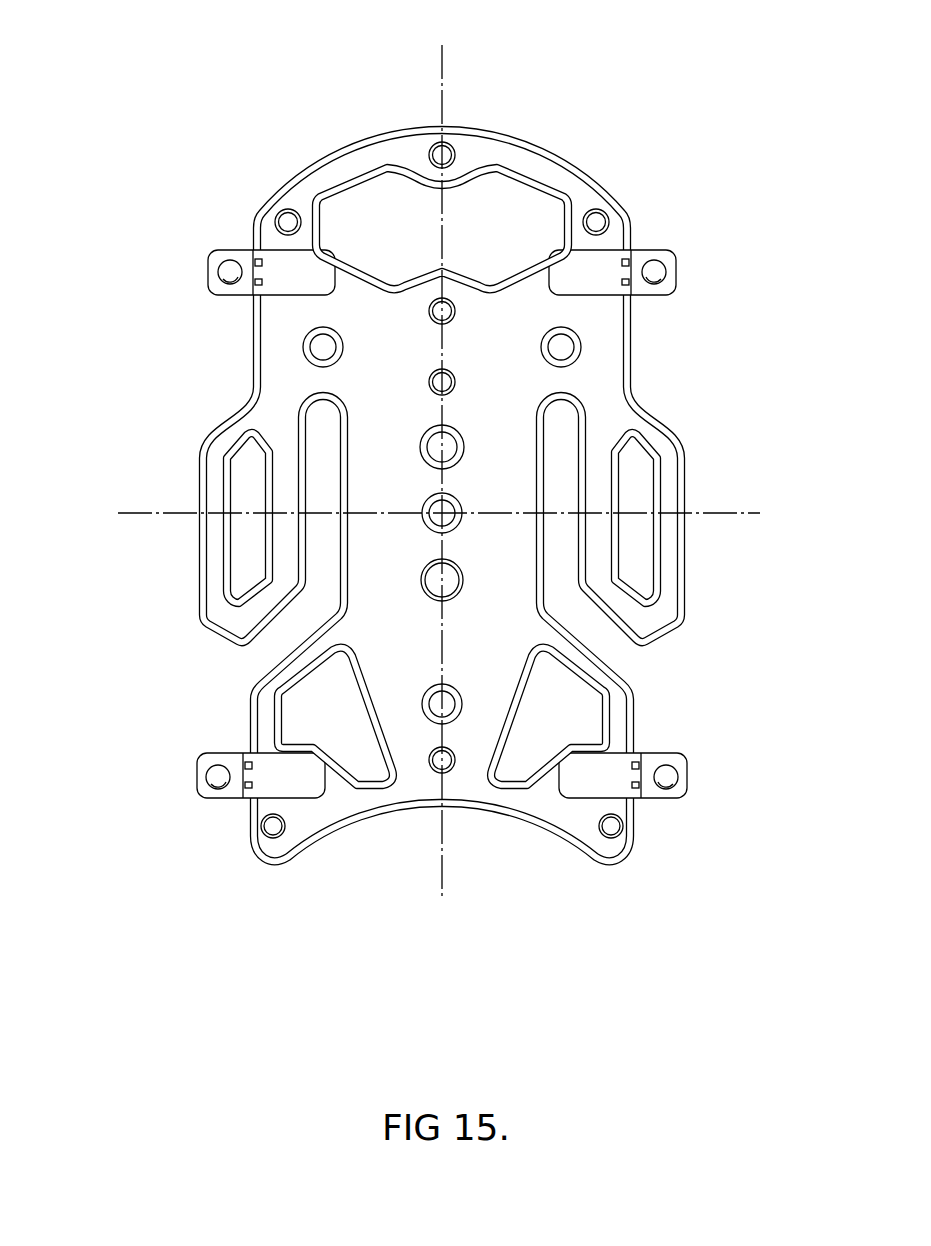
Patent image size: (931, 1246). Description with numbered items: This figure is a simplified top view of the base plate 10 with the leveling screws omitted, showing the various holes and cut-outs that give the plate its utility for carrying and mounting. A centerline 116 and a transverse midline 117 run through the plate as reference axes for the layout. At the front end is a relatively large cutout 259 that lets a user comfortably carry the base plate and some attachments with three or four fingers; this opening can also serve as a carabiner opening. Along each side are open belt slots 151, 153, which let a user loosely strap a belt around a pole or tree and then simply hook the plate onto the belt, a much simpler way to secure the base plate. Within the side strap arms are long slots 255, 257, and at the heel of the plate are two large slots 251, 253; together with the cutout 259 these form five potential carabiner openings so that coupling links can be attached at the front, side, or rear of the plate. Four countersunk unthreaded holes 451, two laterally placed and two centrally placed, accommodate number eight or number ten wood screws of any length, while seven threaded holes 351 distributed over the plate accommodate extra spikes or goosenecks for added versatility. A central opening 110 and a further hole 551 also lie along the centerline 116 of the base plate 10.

The base plate 10 is at (778, 83).
The central opening 110 is at (462, 571).
The central longitudinal axis (CL) 116 is at (443, 76).
The medial-lateral axis (ML) 117 is at (143, 515).
The open belt slot 151 is at (270, 645).
The open belt slot 153 is at (618, 643).
The carabiner opening 251 is at (307, 716).
The carabiner opening 253 is at (593, 717).
The carabiner opening 255 is at (240, 548).
The carabiner opening 257 is at (642, 557).
The cutout 259 is at (507, 190).
The threaded holes 351 is at (432, 146).
The countersunk unthreaded holes 451 is at (341, 333).
The aperture 551 is at (457, 391).